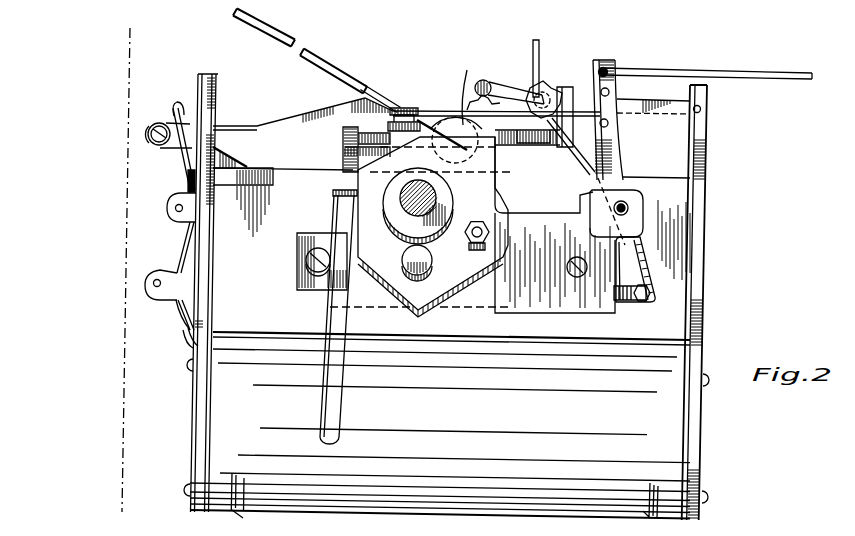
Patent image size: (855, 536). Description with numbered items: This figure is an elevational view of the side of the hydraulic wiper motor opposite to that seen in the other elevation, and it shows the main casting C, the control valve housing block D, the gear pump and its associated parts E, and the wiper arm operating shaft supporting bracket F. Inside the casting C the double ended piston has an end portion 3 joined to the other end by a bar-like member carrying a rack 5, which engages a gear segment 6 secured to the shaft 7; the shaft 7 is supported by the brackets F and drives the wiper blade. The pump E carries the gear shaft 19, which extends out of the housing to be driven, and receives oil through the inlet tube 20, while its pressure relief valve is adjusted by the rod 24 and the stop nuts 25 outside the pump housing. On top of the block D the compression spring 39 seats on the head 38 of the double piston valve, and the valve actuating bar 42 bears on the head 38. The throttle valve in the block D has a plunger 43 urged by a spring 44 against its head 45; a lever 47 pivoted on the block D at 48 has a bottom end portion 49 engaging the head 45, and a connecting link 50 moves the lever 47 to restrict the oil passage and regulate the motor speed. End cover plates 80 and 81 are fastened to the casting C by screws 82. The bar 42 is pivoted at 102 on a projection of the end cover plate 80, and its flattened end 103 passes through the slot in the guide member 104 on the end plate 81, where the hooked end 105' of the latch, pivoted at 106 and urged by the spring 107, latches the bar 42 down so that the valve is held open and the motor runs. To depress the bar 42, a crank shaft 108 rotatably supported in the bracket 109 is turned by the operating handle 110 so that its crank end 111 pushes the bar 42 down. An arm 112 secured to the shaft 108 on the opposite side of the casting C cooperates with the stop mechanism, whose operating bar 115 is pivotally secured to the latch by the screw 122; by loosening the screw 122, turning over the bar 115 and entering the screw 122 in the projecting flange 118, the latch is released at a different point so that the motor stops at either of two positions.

The end portion 3 is at (80, 52).
The rack 5 is at (283, 30).
The gear segment 6 is at (544, 150).
The shaft 7 is at (481, 87).
The shaft 19 is at (440, 197).
The tube 20 is at (343, 394).
The rod 24 is at (490, 229).
The stop nuts 25 is at (490, 246).
The head 38 is at (430, 108).
The compression spring 39 is at (406, 110).
The valve actuating bar 42 is at (398, 108).
The valve plunger 43 is at (635, 269).
The spring 44 is at (631, 302).
The head 45 is at (641, 303).
The lever 47 is at (604, 62).
The pivot 48 is at (623, 200).
The bottom end portion 49 is at (648, 270).
The connecting link 50 is at (680, 70).
The end cover plate 80 is at (690, 325).
The end cover plate 81 is at (197, 408).
The screws 82 is at (186, 368).
The pivot 102 is at (701, 109).
The flattened end 103 is at (186, 122).
The guide member 104 is at (217, 87).
The hooked end 105' is at (161, 101).
The pivot 106 is at (177, 213).
The spring 107 is at (177, 305).
The crank shaft 108 is at (551, 100).
The bracket 109 is at (548, 87).
The operating handle 110 is at (541, 45).
The crank end 111 is at (486, 83).
The arm 112 is at (590, 176).
The operating bar 115 is at (228, 166).
The projecting flange 118 is at (157, 288).
The screw 122 is at (158, 146).
The main casting C is at (660, 228).
The control valve housing D is at (552, 306).
The pump E is at (463, 255).
The wiper arm operating shaft supporting bracket F is at (346, 160).